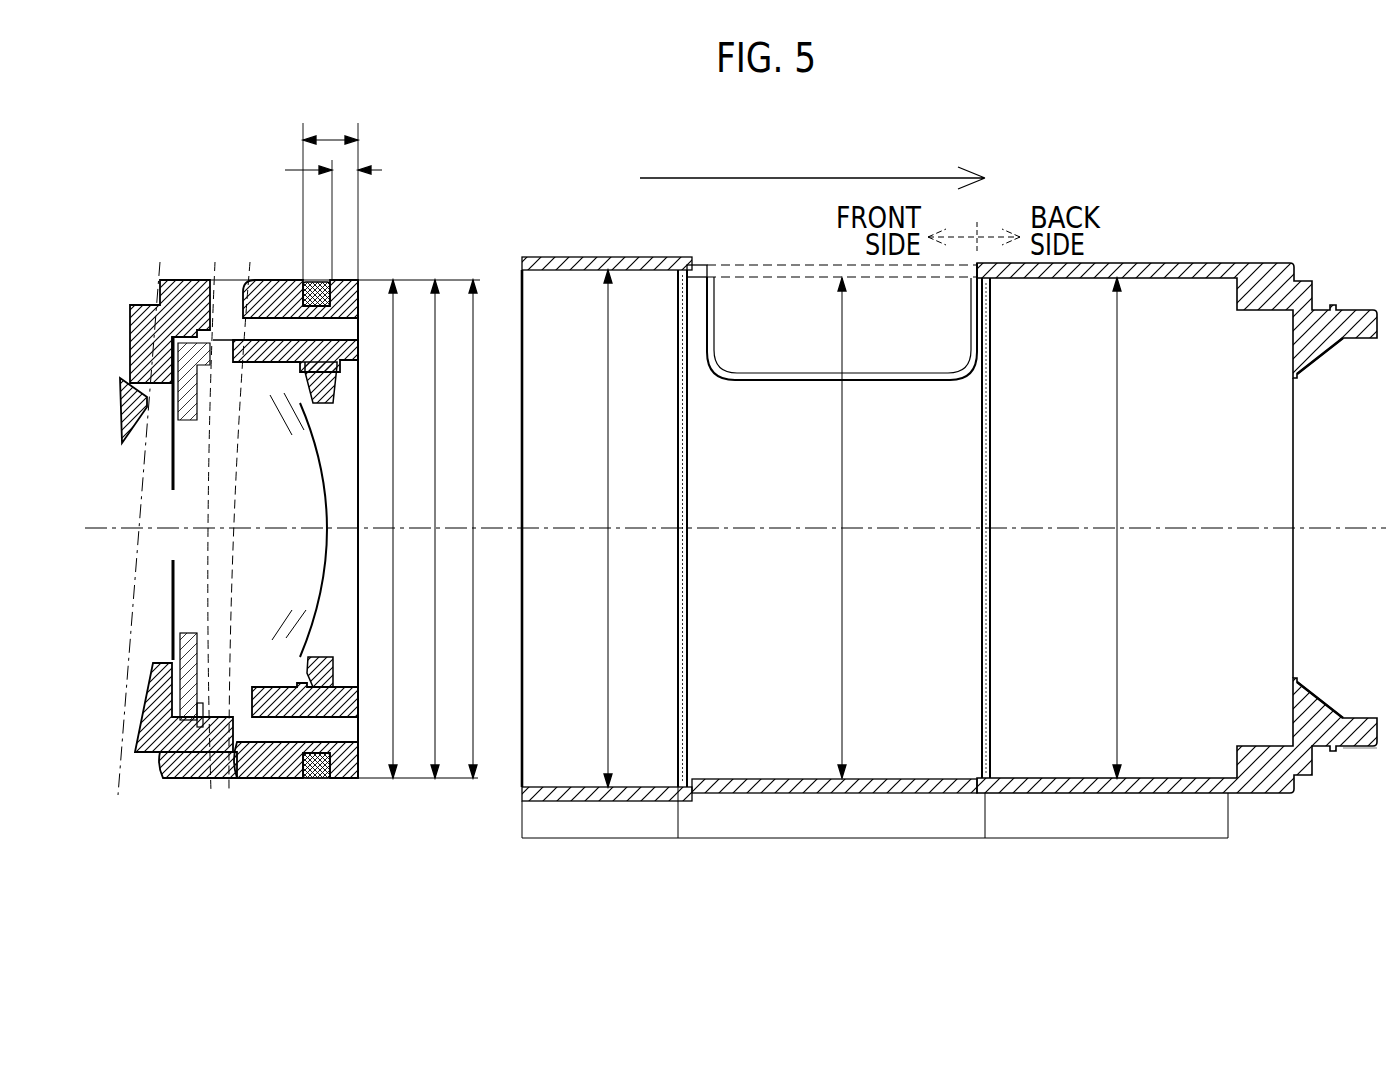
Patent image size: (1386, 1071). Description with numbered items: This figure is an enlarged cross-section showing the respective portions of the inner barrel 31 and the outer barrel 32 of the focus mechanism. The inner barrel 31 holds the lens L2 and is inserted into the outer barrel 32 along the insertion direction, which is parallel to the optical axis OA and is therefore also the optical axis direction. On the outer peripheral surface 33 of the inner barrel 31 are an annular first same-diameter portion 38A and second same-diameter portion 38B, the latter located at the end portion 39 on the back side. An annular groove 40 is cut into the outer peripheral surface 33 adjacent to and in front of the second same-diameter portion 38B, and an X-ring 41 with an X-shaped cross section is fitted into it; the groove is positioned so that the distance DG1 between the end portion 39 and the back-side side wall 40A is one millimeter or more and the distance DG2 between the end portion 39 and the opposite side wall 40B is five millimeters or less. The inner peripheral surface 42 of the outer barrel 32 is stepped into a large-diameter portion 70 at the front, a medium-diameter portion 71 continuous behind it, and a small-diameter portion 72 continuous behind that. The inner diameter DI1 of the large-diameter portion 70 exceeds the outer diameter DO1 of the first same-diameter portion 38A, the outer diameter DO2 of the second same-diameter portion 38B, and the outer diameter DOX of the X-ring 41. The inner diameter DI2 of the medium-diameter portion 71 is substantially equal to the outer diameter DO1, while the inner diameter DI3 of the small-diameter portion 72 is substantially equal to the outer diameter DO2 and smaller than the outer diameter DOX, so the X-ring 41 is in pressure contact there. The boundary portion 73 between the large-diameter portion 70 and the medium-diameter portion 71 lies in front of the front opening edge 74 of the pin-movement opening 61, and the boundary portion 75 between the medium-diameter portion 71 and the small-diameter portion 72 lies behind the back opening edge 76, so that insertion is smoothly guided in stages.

The inner barrel 31 is at (255, 779).
The outer barrel 32 is at (1350, 750).
The outer peripheral surface 33 is at (203, 280).
The first same-diameter portion 38A is at (165, 782).
The second same-diameter portion 38B is at (353, 782).
The end portion 39 is at (360, 318).
The groove 40 is at (325, 782).
The side wall 40A is at (338, 281).
The side wall 40B is at (309, 283).
The X-ring 41 is at (303, 782).
The inner peripheral surface 42 is at (1172, 281).
The pin-movement opening 61 is at (708, 318).
The large-diameter portion 70 is at (605, 838).
The medium-diameter portion 71 is at (832, 562).
The small-diameter portion 72 is at (1144, 552).
The boundary portion 73 is at (689, 460).
The opening edge 74 is at (709, 331).
The boundary portion 75 is at (992, 430).
The opening edge 76 is at (976, 312).
The lens L2 is at (325, 458).
The optical axis OA is at (1222, 527).
The outer diameter DO1 is at (435, 310).
The outer diameter DO2 is at (393, 728).
The outer diameter DOX is at (473, 728).
The inner diameter DI1 is at (609, 300).
The inner diameter DI2 is at (843, 450).
The inner diameter DI3 is at (1118, 322).
The distance DG1 is at (345, 170).
The distance DG2 is at (331, 140).